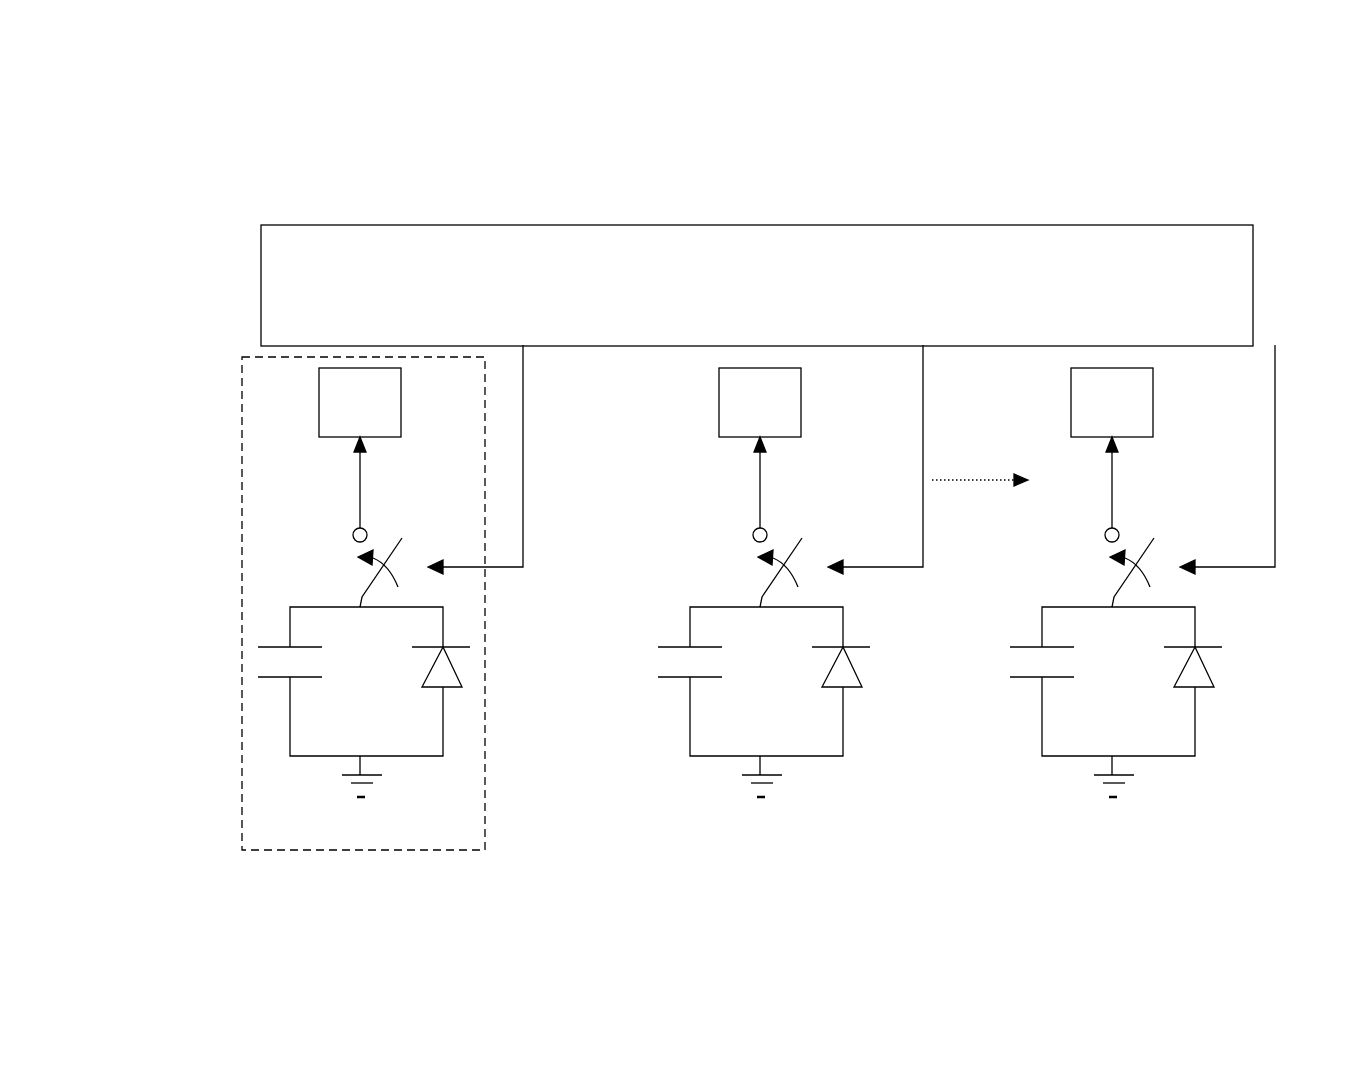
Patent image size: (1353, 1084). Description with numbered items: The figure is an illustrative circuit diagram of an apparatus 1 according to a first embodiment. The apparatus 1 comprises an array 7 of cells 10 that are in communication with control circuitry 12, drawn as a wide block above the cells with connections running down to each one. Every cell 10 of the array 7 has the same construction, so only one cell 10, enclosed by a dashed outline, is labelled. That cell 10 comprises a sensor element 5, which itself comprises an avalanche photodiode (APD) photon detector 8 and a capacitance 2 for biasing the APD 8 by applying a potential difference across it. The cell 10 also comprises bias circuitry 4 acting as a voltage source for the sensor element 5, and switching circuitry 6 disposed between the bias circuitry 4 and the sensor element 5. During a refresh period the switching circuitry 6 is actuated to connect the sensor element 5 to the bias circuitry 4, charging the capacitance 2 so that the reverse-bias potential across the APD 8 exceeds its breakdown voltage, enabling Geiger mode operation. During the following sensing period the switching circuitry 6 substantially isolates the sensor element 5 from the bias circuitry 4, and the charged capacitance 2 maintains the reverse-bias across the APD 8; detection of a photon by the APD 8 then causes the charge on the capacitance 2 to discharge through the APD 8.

The apparatus 1 is at (166, 210).
The control circuitry 12 is at (505, 225).
The bias circuitry 4 is at (319, 400).
The switching circuitry 6 is at (318, 559).
The avalanche photodiode (APD) photon detector 8 is at (541, 605).
The capacitance 2 is at (270, 678).
The cell 10 is at (440, 850).
The sensor element 5 is at (522, 695).
The array 7 is at (711, 580).